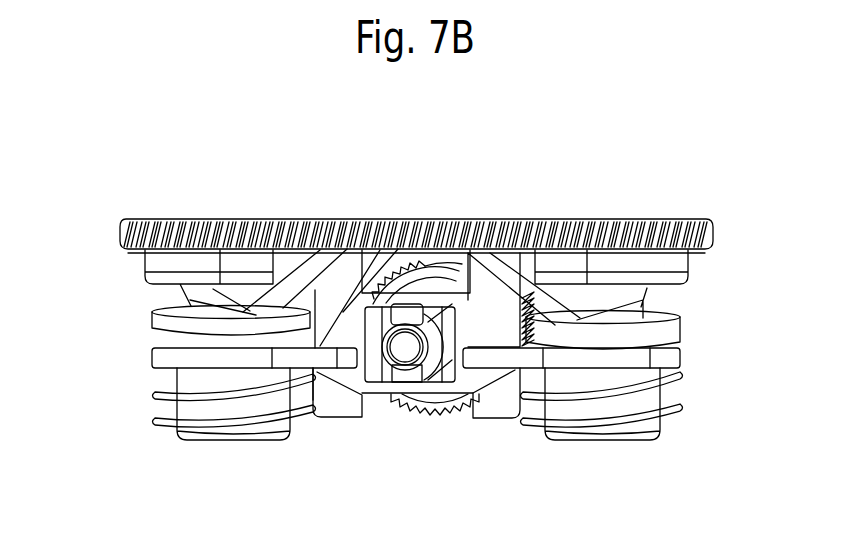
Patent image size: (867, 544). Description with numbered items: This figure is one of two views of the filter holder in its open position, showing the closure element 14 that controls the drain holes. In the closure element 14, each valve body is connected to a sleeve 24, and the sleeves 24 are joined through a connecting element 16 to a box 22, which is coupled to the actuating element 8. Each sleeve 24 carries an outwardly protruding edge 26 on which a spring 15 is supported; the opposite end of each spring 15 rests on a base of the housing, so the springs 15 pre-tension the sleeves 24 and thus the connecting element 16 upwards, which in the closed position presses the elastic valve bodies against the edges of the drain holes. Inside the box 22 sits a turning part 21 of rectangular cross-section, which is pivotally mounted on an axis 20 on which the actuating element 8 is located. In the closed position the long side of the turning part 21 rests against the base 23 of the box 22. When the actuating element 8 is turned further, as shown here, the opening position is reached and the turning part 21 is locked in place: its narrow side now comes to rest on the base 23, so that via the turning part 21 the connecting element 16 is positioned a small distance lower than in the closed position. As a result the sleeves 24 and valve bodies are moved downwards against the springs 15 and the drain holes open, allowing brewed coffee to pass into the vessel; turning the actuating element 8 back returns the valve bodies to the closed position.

The actuating element 8 is at (438, 418).
The closure element 14 is at (416, 318).
The spring 15 is at (677, 405).
The connecting element 16 is at (325, 356).
The axis 20 is at (403, 346).
The turning part 21 is at (408, 317).
The box 22 is at (440, 302).
The base 23 is at (382, 390).
The sleeve 24 is at (193, 398).
The outwardly protruding edge 26 is at (667, 357).